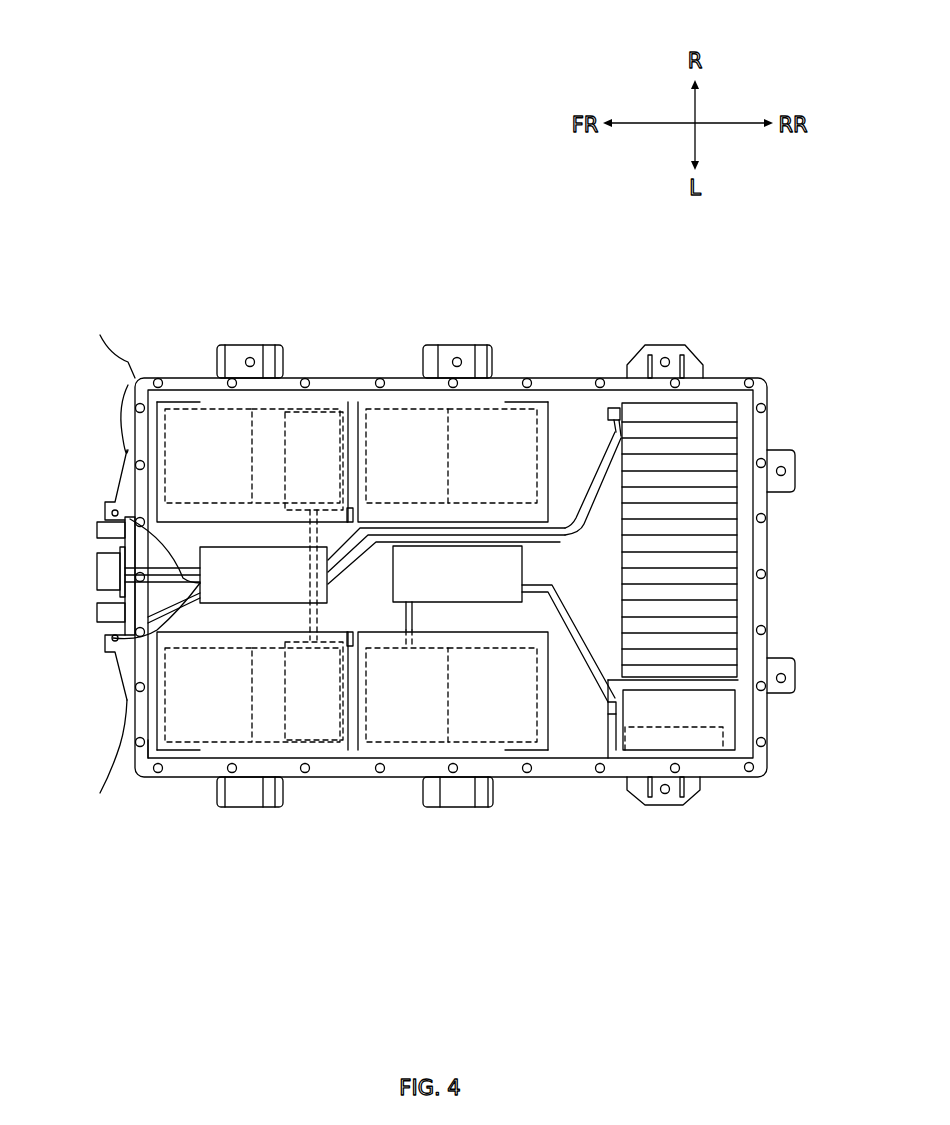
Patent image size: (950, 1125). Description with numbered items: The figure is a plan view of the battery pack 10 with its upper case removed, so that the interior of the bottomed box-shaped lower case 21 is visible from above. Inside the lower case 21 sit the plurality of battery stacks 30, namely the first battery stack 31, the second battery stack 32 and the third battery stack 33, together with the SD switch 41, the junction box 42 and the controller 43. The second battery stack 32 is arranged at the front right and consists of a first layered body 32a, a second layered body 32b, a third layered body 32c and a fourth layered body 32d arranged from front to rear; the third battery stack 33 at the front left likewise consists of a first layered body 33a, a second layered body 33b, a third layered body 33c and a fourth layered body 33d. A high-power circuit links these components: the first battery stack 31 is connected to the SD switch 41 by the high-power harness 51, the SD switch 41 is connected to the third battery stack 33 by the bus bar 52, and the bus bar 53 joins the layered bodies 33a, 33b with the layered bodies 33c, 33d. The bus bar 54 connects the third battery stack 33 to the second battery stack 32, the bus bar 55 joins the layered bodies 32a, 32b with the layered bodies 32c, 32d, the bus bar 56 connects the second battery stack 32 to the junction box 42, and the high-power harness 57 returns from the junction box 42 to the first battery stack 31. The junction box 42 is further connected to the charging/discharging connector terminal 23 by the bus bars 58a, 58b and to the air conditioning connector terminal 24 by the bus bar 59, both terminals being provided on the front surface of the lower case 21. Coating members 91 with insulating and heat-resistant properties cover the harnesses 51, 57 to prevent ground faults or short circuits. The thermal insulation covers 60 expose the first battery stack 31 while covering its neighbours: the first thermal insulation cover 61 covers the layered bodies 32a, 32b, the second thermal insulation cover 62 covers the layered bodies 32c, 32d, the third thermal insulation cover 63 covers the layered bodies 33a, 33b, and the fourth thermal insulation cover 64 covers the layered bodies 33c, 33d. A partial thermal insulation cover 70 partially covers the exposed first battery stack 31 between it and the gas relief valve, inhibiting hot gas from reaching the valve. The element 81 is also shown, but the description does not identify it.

The battery pack 10 is at (87, 35).
The lower case 21 is at (138, 380).
The charging/discharging connector terminal 23 is at (97, 558).
The air conditioning connector terminal 24 is at (97, 607).
The battery stacks 30 is at (712, 399).
The first battery stack 31 is at (743, 443).
The second battery stack 32 is at (553, 281).
The first layered body 32a is at (200, 402).
The second layered body 32b is at (293, 402).
The third layered body 32c is at (393, 402).
The fourth layered body 32d is at (510, 402).
The third battery stack 33 is at (187, 872).
The first layered body 33a is at (200, 755).
The second layered body 33b is at (293, 755).
The third layered body 33c is at (382, 755).
The fourth layered body 33d is at (507, 755).
The SD switch 41 is at (508, 568).
The junction box 42 is at (325, 594).
The controller 43 is at (745, 747).
The high-power harness 51 is at (574, 637).
The bus bar 52 is at (412, 615).
The bus bar 53 is at (327, 650).
The bus bar 54 is at (310, 625).
The bus bar 55 is at (318, 505).
The bus bar 56 is at (325, 532).
The high-power harness 57 is at (570, 513).
The bus bar 58a is at (110, 510).
The bus bar 58b is at (112, 535).
The bus bar 59 is at (108, 638).
The thermal insulation covers 60 is at (151, 752).
The first thermal insulation cover 61 is at (175, 402).
The second thermal insulation cover 62 is at (549, 403).
The third thermal insulation cover 63 is at (176, 750).
The fourth thermal insulation cover 64 is at (548, 748).
The partial thermal insulation cover 70 is at (725, 712).
The fastening bolt 81 is at (750, 396).
The coating members 91 is at (590, 510).